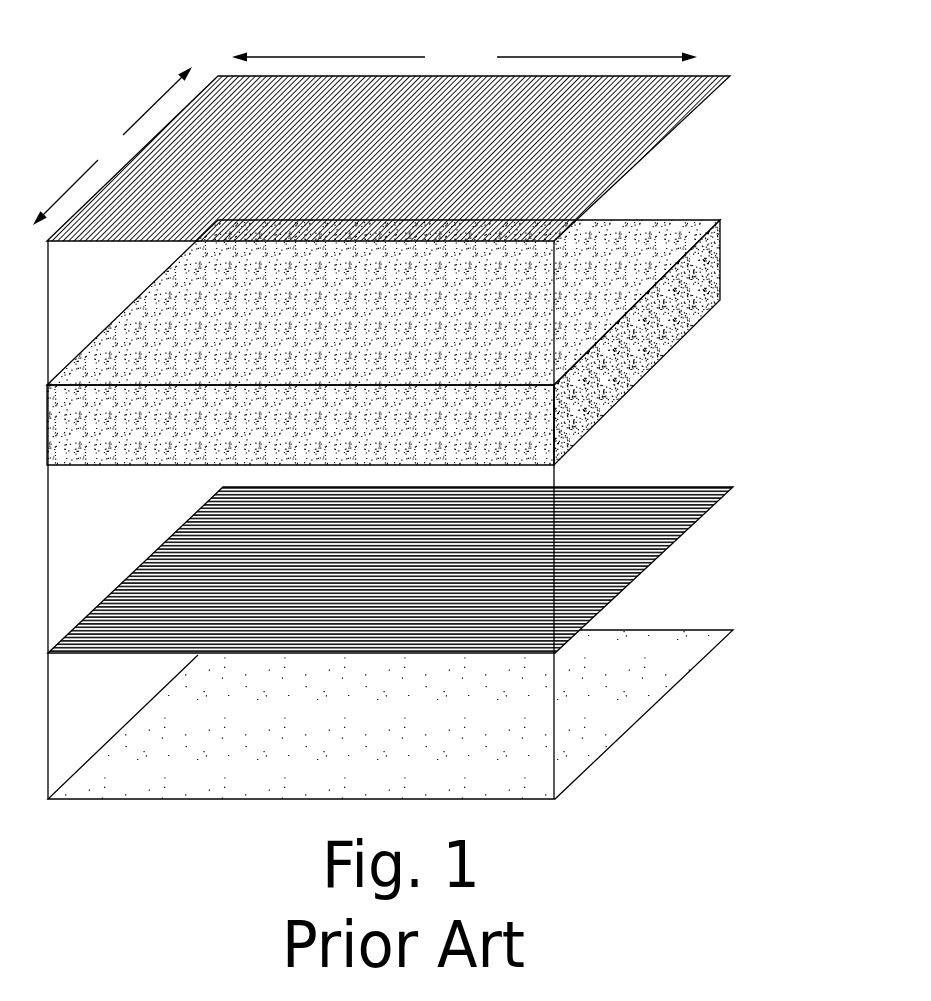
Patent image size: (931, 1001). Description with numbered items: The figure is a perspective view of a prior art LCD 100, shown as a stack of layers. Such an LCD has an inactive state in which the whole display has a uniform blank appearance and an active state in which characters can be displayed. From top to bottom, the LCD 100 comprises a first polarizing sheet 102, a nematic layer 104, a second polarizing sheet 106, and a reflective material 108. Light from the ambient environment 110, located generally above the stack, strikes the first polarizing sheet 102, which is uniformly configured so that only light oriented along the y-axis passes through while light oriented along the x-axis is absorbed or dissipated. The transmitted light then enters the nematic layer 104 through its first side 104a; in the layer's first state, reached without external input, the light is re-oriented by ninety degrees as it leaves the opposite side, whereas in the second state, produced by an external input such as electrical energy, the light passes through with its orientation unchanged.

The prior art LCD 100 is at (421, 401).
The first polarizing sheet 102 is at (538, 218).
The nematic layer 104 is at (383, 342).
The first side 104a is at (570, 293).
The second polarizing sheet 106 is at (483, 637).
The reflective material 108 is at (495, 784).
The ambient environment 110 is at (408, 26).